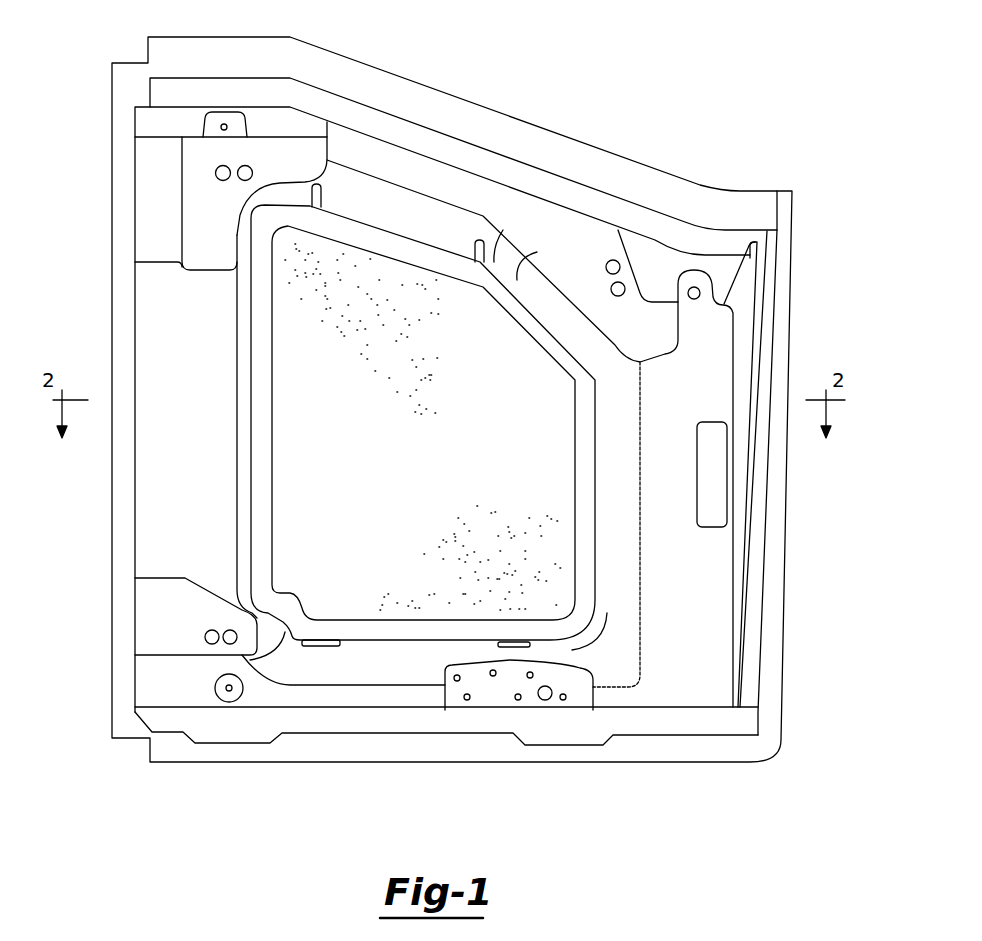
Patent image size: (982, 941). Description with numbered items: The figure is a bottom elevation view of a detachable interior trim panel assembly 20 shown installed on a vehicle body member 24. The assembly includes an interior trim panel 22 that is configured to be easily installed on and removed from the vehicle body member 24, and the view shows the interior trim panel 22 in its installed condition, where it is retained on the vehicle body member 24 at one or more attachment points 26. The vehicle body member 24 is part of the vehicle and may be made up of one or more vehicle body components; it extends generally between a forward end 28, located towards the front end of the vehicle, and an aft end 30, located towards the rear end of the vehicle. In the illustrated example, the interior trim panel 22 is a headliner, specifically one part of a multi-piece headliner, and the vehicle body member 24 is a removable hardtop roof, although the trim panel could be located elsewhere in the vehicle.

The detachable interior trim panel assembly 20 is at (492, 47).
The interior trim panel 22 is at (419, 448).
The vehicle body member 24 is at (112, 340).
The attachment points 26 is at (477, 238).
The forward end 28 is at (210, 763).
The aft end 30 is at (615, 149).